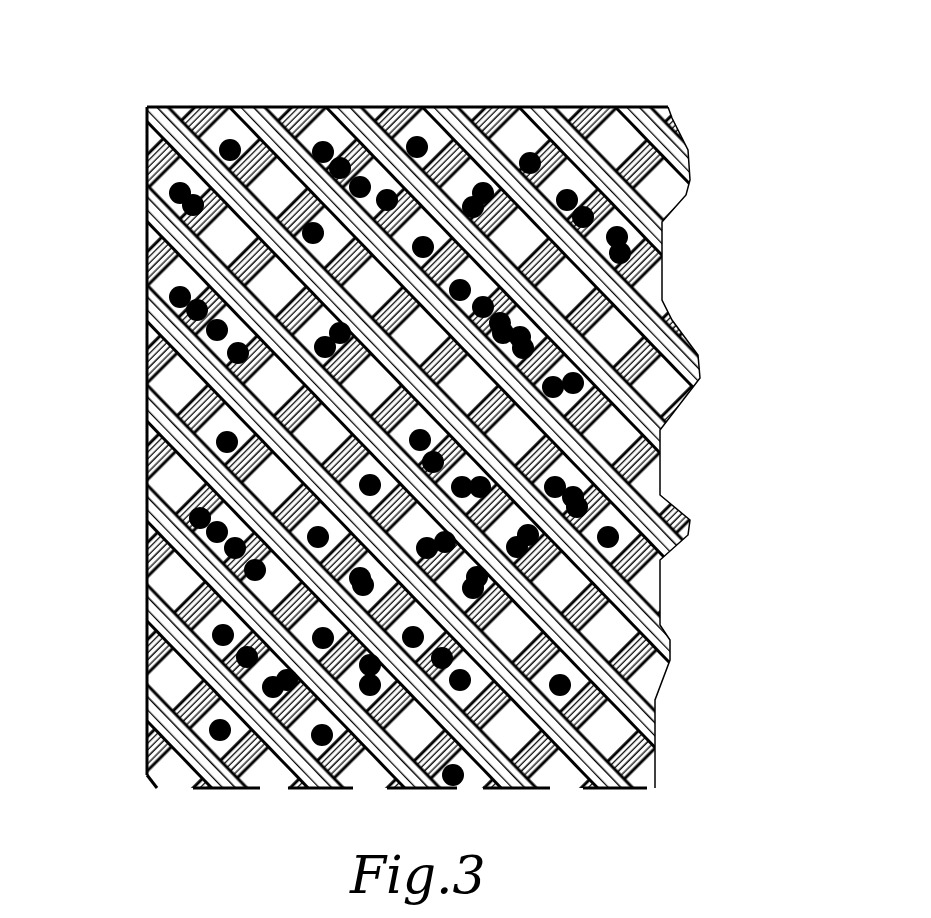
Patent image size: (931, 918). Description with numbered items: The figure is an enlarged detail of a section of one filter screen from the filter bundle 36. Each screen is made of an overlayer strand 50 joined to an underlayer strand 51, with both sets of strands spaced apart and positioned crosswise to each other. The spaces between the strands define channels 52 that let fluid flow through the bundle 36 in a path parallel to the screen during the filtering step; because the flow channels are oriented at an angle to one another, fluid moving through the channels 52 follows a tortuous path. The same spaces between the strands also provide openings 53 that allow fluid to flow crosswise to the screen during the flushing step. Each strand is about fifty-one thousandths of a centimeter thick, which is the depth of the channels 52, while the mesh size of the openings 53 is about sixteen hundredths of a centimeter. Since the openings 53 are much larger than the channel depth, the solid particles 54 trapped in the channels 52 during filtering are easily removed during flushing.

The filter bundle 36 is at (424, 434).
The overlayer strand 50 is at (547, 110).
The underlayer strand 51 is at (263, 167).
The channels 52 is at (152, 158).
The openings 53 is at (280, 192).
The solid particles 54 is at (192, 214).